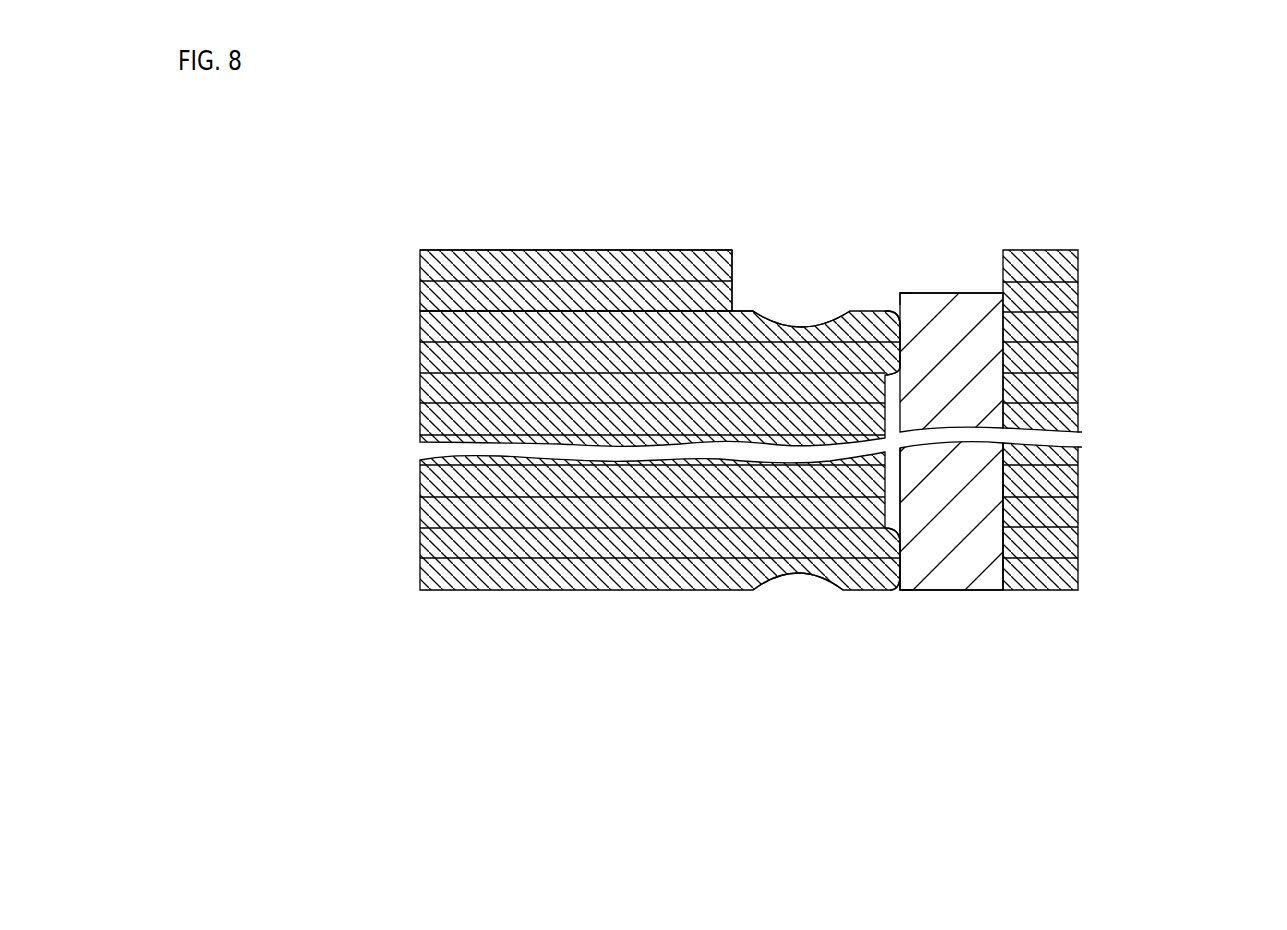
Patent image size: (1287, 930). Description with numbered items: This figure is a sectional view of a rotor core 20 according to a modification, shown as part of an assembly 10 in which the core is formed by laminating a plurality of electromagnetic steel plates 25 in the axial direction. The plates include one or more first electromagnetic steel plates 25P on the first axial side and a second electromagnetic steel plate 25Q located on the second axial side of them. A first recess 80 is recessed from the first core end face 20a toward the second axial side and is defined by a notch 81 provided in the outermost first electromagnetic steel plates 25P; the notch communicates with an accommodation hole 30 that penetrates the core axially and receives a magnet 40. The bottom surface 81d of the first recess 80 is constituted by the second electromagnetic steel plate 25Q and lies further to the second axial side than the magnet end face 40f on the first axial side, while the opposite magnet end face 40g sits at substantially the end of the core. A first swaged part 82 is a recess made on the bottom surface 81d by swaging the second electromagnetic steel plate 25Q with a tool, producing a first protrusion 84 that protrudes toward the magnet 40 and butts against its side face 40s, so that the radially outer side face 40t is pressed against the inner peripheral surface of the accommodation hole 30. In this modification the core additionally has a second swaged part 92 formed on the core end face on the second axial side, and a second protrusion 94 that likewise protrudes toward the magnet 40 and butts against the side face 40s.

The electronic device 10 is at (647, 214).
The rotor core 20 is at (574, 244).
The first core end face 20a is at (480, 249).
The electromagnetic steel plates 25 is at (418, 388).
The first electromagnetic steel plates 25P is at (420, 268).
The second electromagnetic steel plate 25Q is at (420, 330).
The accommodation hole 30 is at (1010, 470).
The magnet 40 is at (938, 308).
The magnet end face 40f is at (982, 298).
The magnet end face 40g is at (990, 590).
The side face 40s is at (900, 543).
The side face 40t is at (1010, 540).
The first recess 80 is at (742, 290).
The notch 81 is at (742, 262).
The bottom surface 81d is at (868, 300).
The first swaged part 82 is at (803, 326).
The first protrusion 84 is at (912, 293).
The second swaged part 92 is at (797, 578).
The second protrusion 94 is at (913, 590).